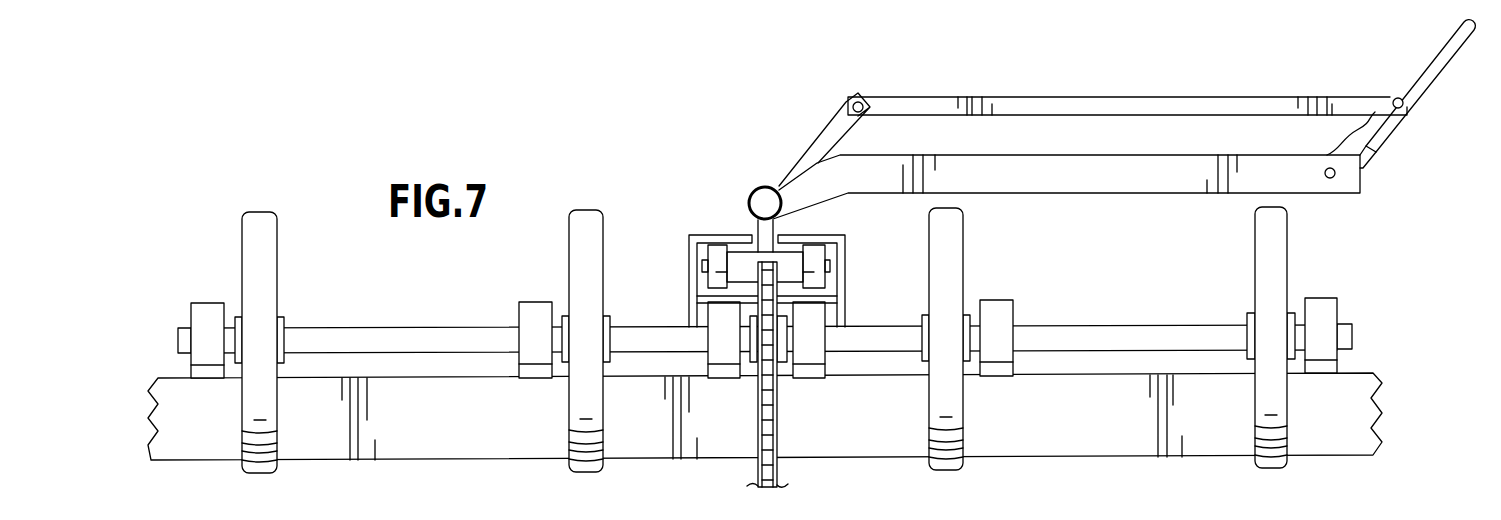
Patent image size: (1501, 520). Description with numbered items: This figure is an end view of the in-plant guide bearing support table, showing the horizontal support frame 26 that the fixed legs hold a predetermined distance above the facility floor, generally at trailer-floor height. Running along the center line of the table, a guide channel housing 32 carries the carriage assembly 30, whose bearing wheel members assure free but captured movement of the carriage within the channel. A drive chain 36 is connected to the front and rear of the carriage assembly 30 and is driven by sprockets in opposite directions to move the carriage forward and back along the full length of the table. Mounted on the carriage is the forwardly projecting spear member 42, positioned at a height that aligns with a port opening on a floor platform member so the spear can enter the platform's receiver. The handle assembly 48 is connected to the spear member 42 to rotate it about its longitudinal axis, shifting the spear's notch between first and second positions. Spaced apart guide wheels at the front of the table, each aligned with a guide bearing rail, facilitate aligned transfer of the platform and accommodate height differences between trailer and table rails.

The horizontal support frame 26 is at (1108, 430).
The carriage assembly 30 is at (745, 256).
The guide channel housing 32 is at (845, 289).
The drive chain 36 is at (777, 423).
The spear member 42 is at (763, 196).
The handle assembly 48 is at (1108, 86).